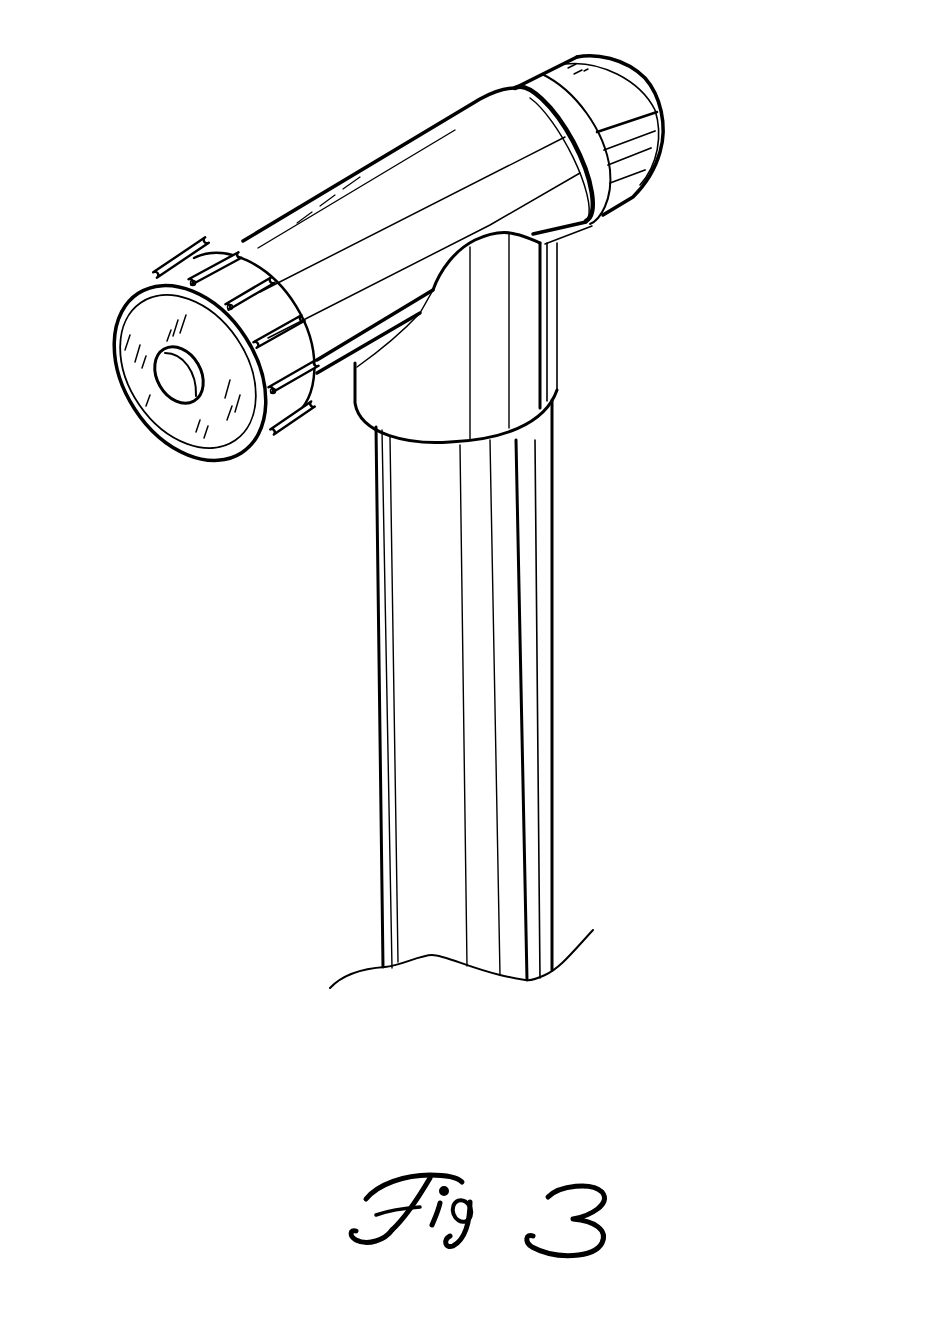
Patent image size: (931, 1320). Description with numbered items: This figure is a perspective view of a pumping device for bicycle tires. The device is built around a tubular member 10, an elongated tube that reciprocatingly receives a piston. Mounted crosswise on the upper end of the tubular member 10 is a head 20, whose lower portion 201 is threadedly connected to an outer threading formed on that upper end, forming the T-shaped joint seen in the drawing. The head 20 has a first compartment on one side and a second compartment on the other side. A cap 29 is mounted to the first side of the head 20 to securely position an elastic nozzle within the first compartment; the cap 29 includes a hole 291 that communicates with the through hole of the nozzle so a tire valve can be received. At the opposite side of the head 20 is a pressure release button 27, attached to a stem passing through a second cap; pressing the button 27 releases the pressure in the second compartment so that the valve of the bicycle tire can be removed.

The tubular member 10 is at (533, 690).
The head 20 is at (400, 183).
The pressure release button 27 is at (573, 87).
The cap 29 is at (143, 307).
The hole 291 is at (172, 365).
The lower portion 201 is at (540, 355).